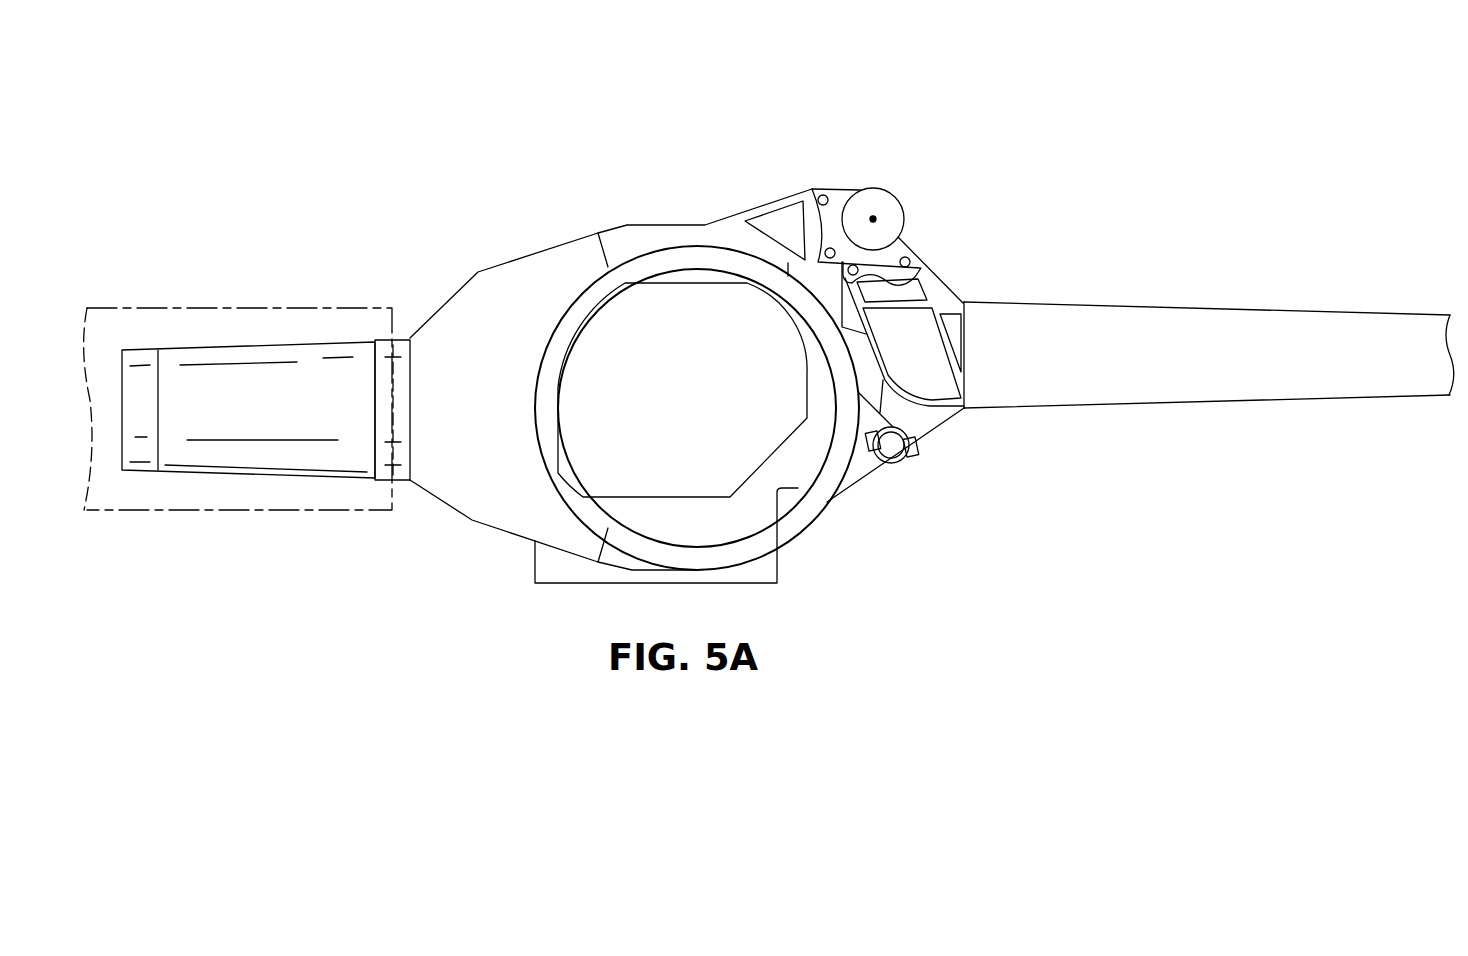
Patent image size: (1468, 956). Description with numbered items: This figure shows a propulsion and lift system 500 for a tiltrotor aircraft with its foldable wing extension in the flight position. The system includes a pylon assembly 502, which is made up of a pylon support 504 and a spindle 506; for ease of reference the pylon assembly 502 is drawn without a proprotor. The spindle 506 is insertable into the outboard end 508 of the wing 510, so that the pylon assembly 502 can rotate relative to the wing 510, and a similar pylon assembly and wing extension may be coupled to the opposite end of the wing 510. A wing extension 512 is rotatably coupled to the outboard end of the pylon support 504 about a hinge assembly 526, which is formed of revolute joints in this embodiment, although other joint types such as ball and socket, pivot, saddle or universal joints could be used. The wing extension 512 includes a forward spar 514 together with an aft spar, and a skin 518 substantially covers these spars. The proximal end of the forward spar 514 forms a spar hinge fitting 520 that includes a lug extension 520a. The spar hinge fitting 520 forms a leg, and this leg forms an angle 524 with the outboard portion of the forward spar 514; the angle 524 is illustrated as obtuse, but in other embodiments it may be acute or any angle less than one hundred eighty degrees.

The propulsion and lift system 500 is at (492, 92).
The pylon assembly 502 is at (577, 235).
The pylon support 504 is at (657, 223).
The spindle 506 is at (305, 383).
The outboard end 508 is at (393, 326).
The wing 510 is at (195, 306).
The wing extension 512 is at (1242, 308).
The forward spar 514 is at (935, 370).
The skin 518 is at (1323, 320).
The spar hinge fitting 520 is at (930, 278).
The lug extension 520a is at (917, 240).
The angle 524 is at (957, 302).
The hinge assembly 526 is at (875, 185).